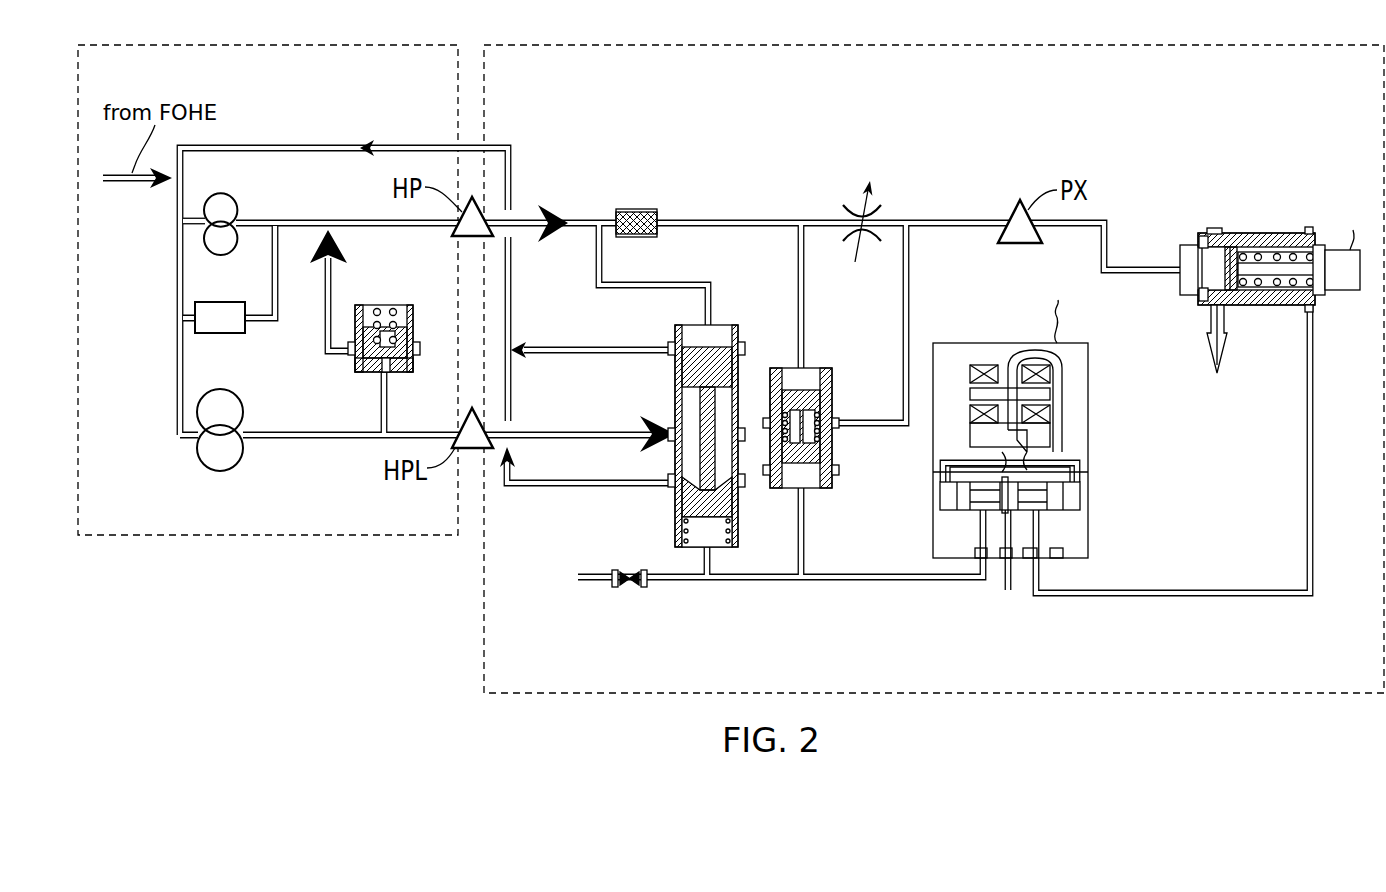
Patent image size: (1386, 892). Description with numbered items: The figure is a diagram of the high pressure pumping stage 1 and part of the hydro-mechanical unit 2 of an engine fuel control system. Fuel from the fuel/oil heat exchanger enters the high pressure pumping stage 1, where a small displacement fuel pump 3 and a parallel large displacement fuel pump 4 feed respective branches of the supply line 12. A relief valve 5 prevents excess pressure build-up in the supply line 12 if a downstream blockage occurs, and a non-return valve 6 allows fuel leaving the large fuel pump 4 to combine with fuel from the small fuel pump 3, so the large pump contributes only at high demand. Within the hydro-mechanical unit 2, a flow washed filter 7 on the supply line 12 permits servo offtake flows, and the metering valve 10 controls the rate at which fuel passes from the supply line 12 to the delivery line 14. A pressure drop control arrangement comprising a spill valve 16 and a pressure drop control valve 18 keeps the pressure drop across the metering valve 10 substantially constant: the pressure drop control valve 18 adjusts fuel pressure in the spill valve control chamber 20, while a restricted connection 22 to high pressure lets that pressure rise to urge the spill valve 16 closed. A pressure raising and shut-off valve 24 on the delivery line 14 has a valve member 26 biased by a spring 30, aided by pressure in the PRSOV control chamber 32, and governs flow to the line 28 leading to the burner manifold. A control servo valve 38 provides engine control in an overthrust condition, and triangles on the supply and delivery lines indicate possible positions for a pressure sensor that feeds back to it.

The high pressure pumping stage 1 is at (323, 43).
The hydro-mechanical unit 2 is at (1078, 43).
The small displacement fuel pump 3 is at (238, 203).
The large displacement fuel pump 4 is at (222, 473).
The relief valve 5 is at (230, 333).
The non-return valve 6 is at (385, 305).
The flow washed filter 7 is at (632, 210).
The metering valve 10 is at (848, 194).
The supply line 12 is at (737, 218).
The delivery line 14 is at (977, 217).
The spill valve 16 is at (663, 372).
The pressure drop control valve 18 is at (845, 389).
The spill valve control chamber 20 is at (702, 533).
The restricted connection 22 is at (637, 598).
The pressure raising and shut-off valve 24 is at (1253, 253).
The valve member 26 is at (1247, 235).
The line 28 is at (1212, 327).
The spring 30 is at (1282, 235).
The PRSOV control chamber 32 is at (1303, 258).
The control servo valve 38 is at (1112, 450).